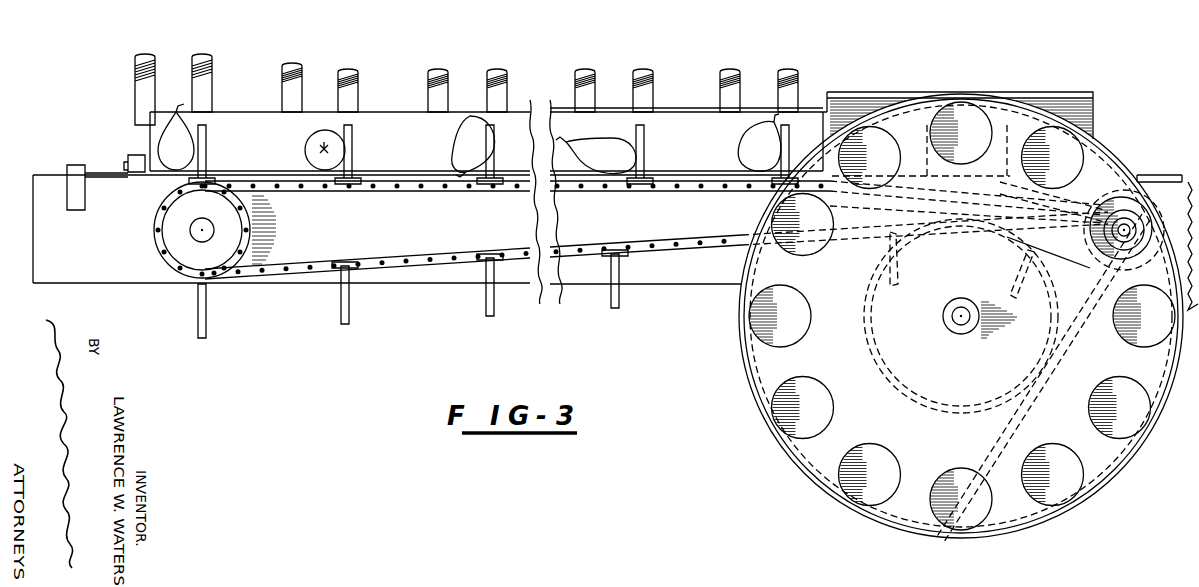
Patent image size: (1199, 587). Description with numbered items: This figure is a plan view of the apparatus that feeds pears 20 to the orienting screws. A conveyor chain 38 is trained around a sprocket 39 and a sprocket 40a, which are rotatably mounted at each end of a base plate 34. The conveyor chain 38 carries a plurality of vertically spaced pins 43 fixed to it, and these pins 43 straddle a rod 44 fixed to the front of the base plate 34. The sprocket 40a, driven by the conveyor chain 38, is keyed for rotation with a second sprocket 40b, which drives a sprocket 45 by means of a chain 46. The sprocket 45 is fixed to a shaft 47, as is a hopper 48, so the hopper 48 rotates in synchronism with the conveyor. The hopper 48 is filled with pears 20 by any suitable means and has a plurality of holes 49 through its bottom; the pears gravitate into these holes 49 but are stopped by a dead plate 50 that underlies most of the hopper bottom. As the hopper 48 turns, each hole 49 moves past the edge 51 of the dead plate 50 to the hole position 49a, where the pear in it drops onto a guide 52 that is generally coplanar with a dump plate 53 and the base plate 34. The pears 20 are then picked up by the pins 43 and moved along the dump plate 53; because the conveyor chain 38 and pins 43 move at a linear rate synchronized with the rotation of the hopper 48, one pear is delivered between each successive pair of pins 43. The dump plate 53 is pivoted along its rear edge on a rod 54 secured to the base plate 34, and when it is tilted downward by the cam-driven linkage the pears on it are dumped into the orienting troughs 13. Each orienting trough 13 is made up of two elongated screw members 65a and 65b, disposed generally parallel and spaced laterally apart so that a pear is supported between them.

The orienting trough 13 is at (190, 44).
The pears 20 is at (452, 150).
The base plate 34 is at (118, 282).
The conveyor chain 38 is at (340, 262).
The sprocket 39 is at (250, 228).
The sprocket 40a is at (1100, 254).
The sprocket 40b is at (1094, 216).
The pins 43 is at (206, 152).
The rod 44 is at (96, 172).
The sprocket 45 is at (1056, 332).
The chain 46 is at (1080, 320).
The shaft 47 is at (964, 322).
The hopper 48 is at (864, 517).
The holes 49 is at (958, 468).
The hole position 49a is at (968, 104).
The dead plate 50 is at (1132, 436).
The edge of dead plate 51 is at (1008, 98).
The guide 52 is at (888, 78).
The dump plate 53 is at (690, 108).
The rod 54 is at (148, 162).
The screw member 65a is at (208, 58).
The screw member 65b is at (460, 48).